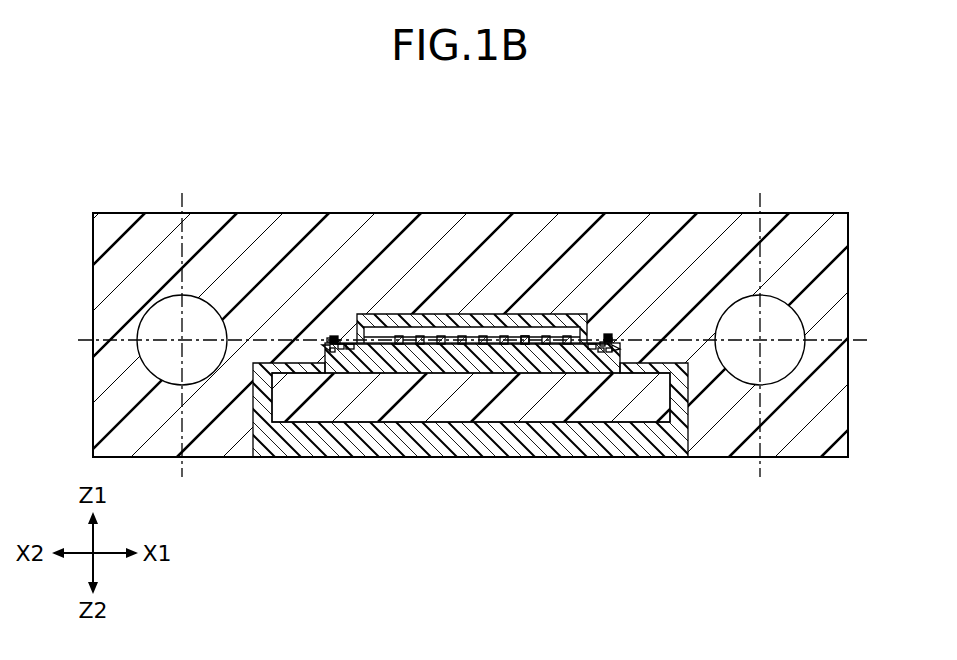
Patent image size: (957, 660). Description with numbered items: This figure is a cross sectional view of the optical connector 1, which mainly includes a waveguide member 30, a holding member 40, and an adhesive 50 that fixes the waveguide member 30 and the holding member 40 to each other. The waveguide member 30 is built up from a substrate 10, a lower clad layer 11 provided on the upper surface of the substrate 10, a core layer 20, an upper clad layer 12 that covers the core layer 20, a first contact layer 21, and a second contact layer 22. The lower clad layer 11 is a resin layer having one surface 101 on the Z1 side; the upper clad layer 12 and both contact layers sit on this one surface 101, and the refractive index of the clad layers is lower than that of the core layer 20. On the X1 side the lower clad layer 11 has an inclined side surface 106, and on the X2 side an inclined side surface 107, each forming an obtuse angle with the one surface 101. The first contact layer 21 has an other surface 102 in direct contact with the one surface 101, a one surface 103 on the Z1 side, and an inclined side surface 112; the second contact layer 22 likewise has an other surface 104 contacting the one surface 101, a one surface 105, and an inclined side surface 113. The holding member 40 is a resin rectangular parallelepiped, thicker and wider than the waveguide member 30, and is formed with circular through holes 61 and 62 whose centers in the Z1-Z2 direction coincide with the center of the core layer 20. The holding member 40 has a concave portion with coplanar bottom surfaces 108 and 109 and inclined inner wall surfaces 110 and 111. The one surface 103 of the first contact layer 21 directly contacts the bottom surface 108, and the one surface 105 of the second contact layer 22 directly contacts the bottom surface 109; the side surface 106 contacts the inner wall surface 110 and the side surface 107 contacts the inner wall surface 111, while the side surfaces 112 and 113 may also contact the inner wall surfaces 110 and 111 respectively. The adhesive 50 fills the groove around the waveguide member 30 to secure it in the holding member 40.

The optical connector 1 is at (875, 137).
The substrate 10 is at (440, 400).
The lower clad layer 11 is at (471, 360).
The upper clad layer 12 is at (520, 333).
The core layer 20 is at (466, 336).
The first contact layer 21 is at (597, 337).
The second contact layer 22 is at (345, 339).
The waveguide member 30 is at (412, 304).
The holding member 40 is at (835, 277).
The adhesive 50 is at (276, 447).
The through hole 61 is at (787, 330).
The through hole 62 is at (150, 335).
The one surface 101 is at (520, 346).
The other surface 102 is at (600, 352).
The one surface 103 is at (604, 344).
The other surface 104 is at (340, 349).
The one surface 105 is at (337, 343).
The side surface 106 is at (616, 348).
The side surface 107 is at (323, 347).
The bottom surface 108 is at (590, 349).
The bottom surface 109 is at (350, 350).
The inner wall surface 110 is at (611, 350).
The inner wall surface 111 is at (332, 352).
The side surface 112 is at (609, 340).
The side surface 113 is at (330, 341).